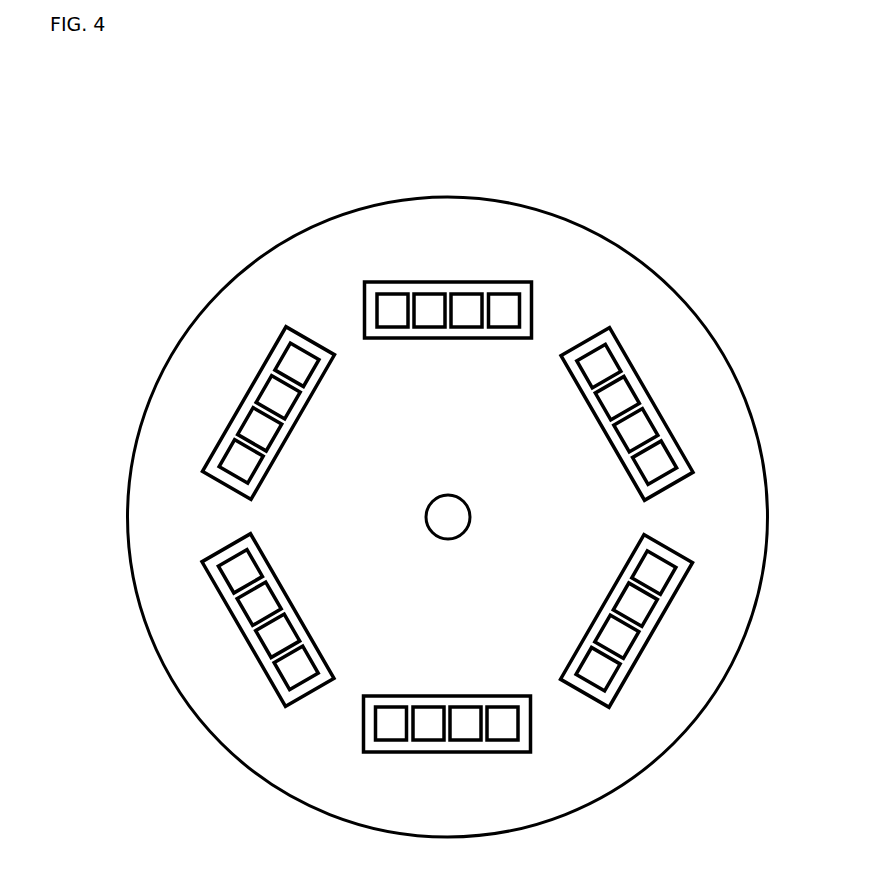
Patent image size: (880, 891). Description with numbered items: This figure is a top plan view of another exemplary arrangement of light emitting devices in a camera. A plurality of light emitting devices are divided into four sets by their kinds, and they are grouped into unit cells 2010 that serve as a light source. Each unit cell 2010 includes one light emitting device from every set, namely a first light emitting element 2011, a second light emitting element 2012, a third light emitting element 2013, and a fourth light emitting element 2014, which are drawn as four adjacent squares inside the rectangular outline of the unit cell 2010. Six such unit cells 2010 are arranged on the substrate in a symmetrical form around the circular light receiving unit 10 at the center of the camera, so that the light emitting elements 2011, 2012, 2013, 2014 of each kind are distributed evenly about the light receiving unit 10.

The light receiving unit 10 is at (455, 513).
The unit cell 2010 is at (447, 282).
The first light emitting element 2011 is at (393, 303).
The second light emitting element 2012 is at (432, 300).
The third light emitting element 2013 is at (473, 302).
The fourth light emitting element 2014 is at (507, 308).